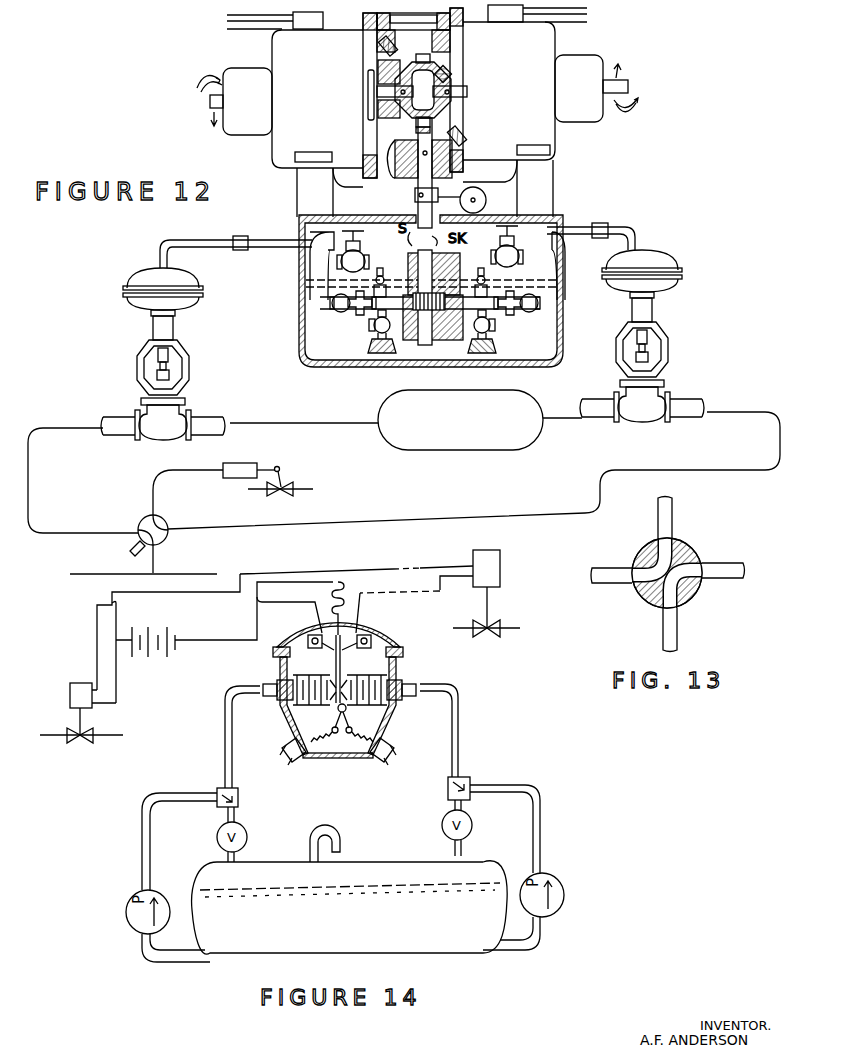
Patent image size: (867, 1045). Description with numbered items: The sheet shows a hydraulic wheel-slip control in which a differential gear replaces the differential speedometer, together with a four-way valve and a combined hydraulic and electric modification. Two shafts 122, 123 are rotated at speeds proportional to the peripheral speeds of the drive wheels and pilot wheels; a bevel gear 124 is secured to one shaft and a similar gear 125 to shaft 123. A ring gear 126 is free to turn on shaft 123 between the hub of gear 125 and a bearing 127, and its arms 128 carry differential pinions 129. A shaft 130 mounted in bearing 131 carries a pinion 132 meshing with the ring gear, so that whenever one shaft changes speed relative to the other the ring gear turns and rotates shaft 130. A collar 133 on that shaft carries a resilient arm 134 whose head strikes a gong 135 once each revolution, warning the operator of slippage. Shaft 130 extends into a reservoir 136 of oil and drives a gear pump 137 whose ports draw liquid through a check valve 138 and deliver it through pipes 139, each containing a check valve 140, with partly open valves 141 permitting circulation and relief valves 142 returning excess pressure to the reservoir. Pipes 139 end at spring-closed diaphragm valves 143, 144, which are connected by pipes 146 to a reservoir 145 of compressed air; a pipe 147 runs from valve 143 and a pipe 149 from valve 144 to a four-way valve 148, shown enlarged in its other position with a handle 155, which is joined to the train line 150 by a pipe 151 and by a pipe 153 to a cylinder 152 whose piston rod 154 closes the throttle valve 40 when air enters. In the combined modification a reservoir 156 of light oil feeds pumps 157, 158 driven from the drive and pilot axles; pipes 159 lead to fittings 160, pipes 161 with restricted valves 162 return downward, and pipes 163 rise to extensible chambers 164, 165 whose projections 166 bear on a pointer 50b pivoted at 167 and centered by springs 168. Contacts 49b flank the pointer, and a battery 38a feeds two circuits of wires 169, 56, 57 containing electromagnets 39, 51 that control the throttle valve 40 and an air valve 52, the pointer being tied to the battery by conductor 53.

In FIG. 12, the shaft 122 is at (456, 94).
In FIG. 12, the shaft 123 is at (380, 95).
In FIG. 12, the bevel gear 124 is at (449, 77).
In FIG. 12, the bevel gear 125 is at (395, 117).
In FIG. 12, the ring gear 126 is at (382, 42).
In FIG. 12, the bearing 127 is at (370, 78).
In FIG. 12, the arms 128 is at (404, 64).
In FIG. 12, the differential pinions 129 is at (441, 66).
In FIG. 12, the shaft 130 is at (418, 208).
In FIG. 12, the bearing 131 is at (414, 181).
In FIG. 12, the pinion 132 is at (463, 140).
In FIG. 12, the collar 133 is at (415, 196).
In FIG. 12, the resilient arm 134 is at (462, 187).
In FIG. 12, the gong 135 is at (486, 195).
In FIG. 12, the reservoir 136 is at (420, 366).
In FIG. 12, the gear pump 137 is at (418, 332).
In FIG. 12, the check valve 138 is at (373, 342).
In FIG. 12, the pipes 139 is at (275, 240).
In FIG. 12, the check valve 140 is at (352, 313).
In FIG. 12, the valves 141 is at (366, 262).
In FIG. 12, the relief valves 142 is at (383, 276).
In FIG. 12, the pressure operated diaphragm valve 143 is at (677, 285).
In FIG. 12, the pressure operated diaphragm valve 144 is at (196, 300).
In FIG. 12, the reservoir containing air under pressure 145 is at (535, 392).
In FIG. 12, the pipes 146 is at (280, 421).
In FIG. 12, the pipe 147 is at (743, 404).
In FIG. 13, the pipe 147 is at (720, 566).
In FIG. 12, the four-way valve 148 is at (142, 518).
In FIG. 13, the four-way valve 148 is at (686, 550).
In FIG. 12, the pipe 149 is at (75, 425).
In FIG. 13, the pipe 149 is at (612, 582).
In FIG. 12, the train line 150 is at (75, 575).
In FIG. 12, the pipe 151 is at (156, 562).
In FIG. 13, the pipe 151 is at (680, 622).
In FIG. 12, the cylinder 152 is at (240, 463).
In FIG. 12, the pipe 153 is at (158, 474).
In FIG. 13, the pipe 153 is at (672, 515).
In FIG. 12, the piston rod 154 is at (284, 465).
In FIG. 12, the handle 155 is at (131, 551).
In FIG. 12, the throttle valve 40 is at (283, 492).
In FIG. 14, the throttle valve 40 is at (79, 745).
In FIG. 14, the battery 38a is at (146, 654).
In FIG. 14, the electromagnet 39 is at (70, 697).
In FIG. 14, the electrical contacts 49b is at (314, 633).
In FIG. 14, the pointer 50b is at (336, 656).
In FIG. 14, the electromagnet 51 is at (500, 560).
In FIG. 14, the air valve 52 is at (495, 635).
In FIG. 14, the conductor 53 is at (200, 638).
In FIG. 14, the wire 56 is at (414, 602).
In FIG. 14, the wire 57 is at (97, 630).
In FIG. 14, the reservoir 156 is at (350, 889).
In FIG. 14, the pump 157 is at (561, 911).
In FIG. 14, the pump 158 is at (128, 926).
In FIG. 14, the pipes 159 is at (142, 861).
In FIG. 14, the fitting 160 is at (239, 795).
In FIG. 14, the pipes 161 is at (236, 815).
In FIG. 14, the valves 162 is at (248, 838).
In FIG. 14, the pipe 163 is at (233, 742).
In FIG. 14, the extensible chamber 164 is at (394, 672).
In FIG. 14, the extensible chamber 165 is at (285, 666).
In FIG. 14, the projections 166 is at (351, 679).
In FIG. 14, the pivot 167 is at (348, 710).
In FIG. 14, the springs 168 is at (368, 744).
In FIG. 14, the wires 169 is at (426, 565).